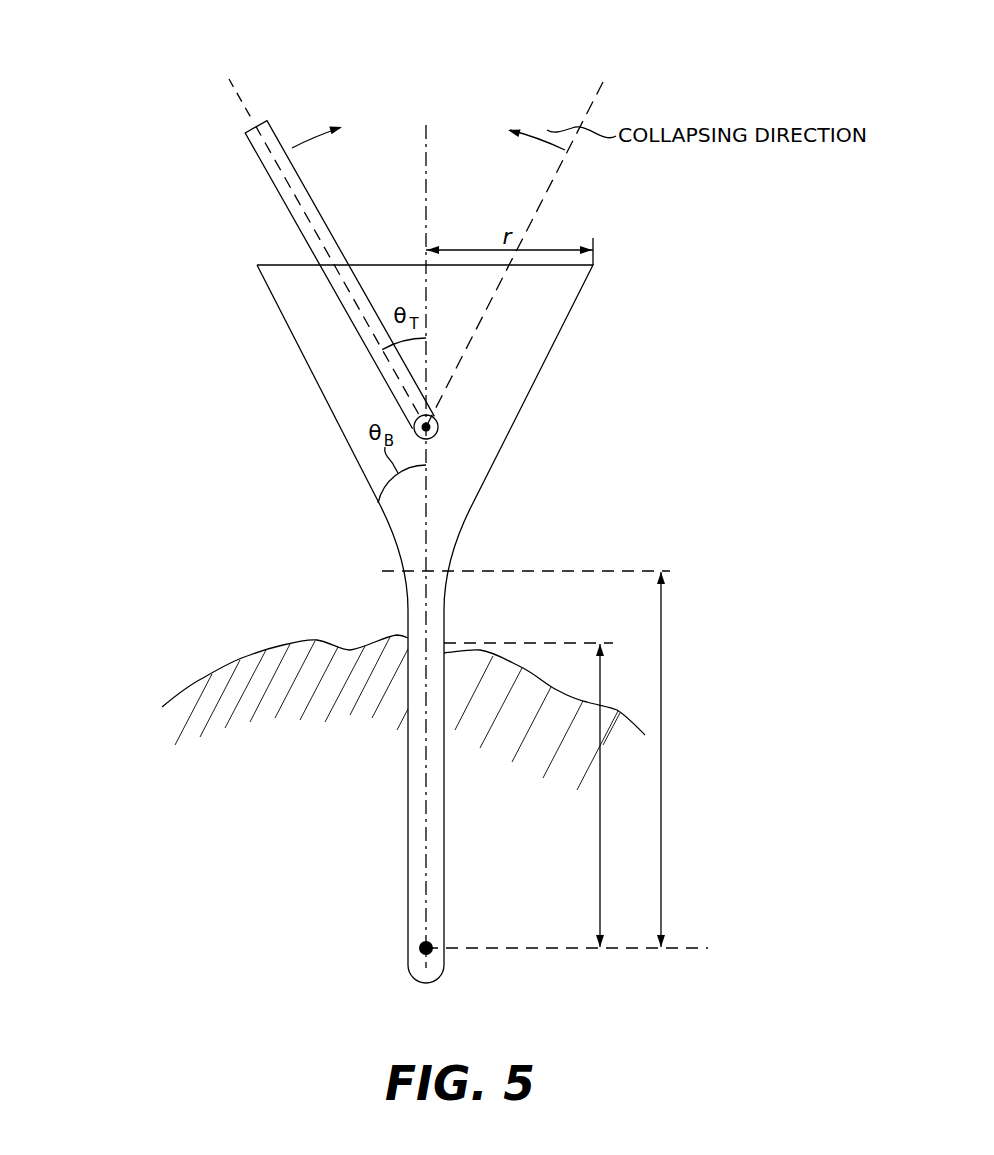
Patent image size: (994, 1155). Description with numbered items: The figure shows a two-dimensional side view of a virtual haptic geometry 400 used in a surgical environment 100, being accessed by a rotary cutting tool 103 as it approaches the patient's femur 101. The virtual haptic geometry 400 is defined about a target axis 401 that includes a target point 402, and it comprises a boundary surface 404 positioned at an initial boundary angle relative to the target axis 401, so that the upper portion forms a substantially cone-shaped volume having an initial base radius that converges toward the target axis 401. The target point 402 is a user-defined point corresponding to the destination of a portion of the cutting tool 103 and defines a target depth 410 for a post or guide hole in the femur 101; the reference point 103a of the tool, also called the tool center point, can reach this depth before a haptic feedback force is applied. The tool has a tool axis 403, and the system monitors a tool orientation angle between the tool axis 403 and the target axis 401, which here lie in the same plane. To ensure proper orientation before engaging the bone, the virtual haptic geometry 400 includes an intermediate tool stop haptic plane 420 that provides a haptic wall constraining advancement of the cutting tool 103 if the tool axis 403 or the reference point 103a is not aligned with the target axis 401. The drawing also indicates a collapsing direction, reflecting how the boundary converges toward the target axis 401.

The surgical environment 100 is at (131, 116).
The femur 101 is at (265, 653).
The rotary cutting tool 103 is at (333, 228).
The tool center point 103a is at (438, 427).
The virtual haptic geometry 400 is at (528, 322).
The target axis 401 is at (426, 156).
The target point 402 is at (418, 948).
The tool axis 403 is at (251, 106).
The boundary surface 404 is at (307, 360).
The target depth 410 is at (600, 643).
The intermediate tool stop haptic plane 420 is at (663, 571).